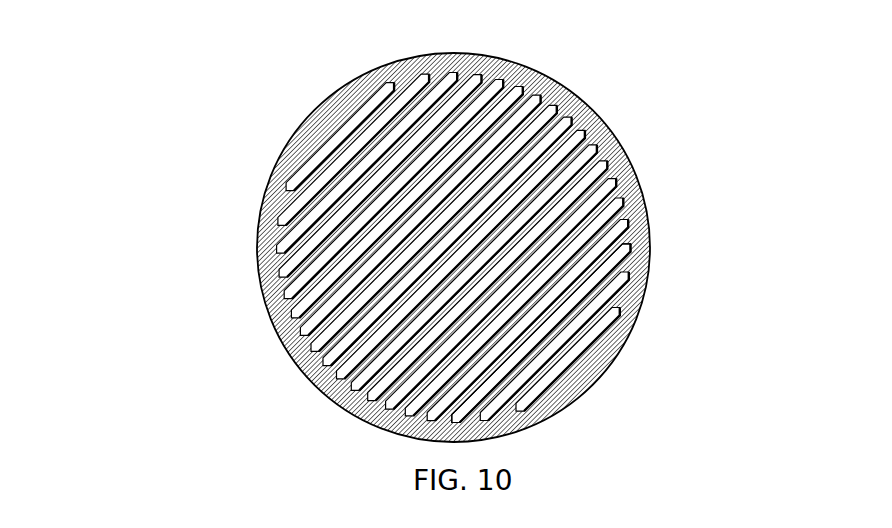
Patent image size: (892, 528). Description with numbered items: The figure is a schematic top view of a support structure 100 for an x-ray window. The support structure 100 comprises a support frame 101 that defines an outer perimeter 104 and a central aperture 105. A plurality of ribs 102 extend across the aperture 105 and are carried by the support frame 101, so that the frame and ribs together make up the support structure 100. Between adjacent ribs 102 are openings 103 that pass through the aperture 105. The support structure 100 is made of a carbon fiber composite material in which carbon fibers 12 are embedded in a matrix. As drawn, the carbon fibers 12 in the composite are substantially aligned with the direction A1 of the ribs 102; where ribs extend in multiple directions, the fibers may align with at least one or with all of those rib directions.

The support structure 100 is at (137, 160).
The carbon fibers 12 is at (288, 150).
The support frame 101 is at (278, 216).
The ribs 102 is at (288, 268).
The openings 103 is at (327, 138).
The perimeter 104 is at (585, 98).
The aperture 105 is at (512, 255).
The direction of the ribs A1 is at (290, 363).